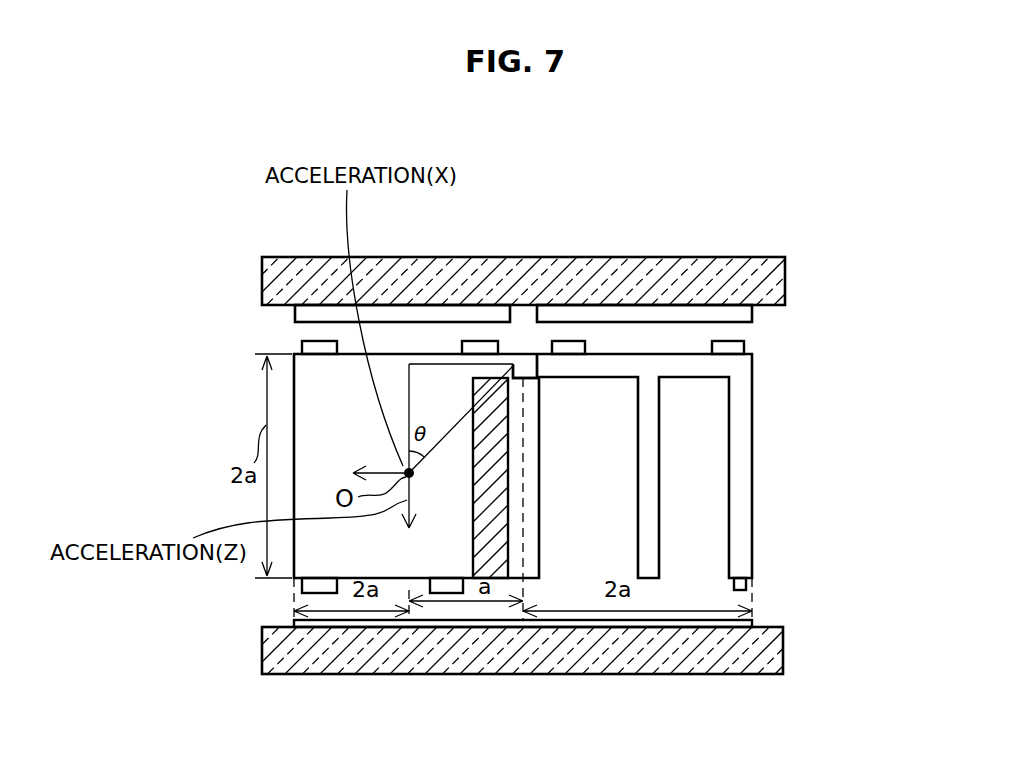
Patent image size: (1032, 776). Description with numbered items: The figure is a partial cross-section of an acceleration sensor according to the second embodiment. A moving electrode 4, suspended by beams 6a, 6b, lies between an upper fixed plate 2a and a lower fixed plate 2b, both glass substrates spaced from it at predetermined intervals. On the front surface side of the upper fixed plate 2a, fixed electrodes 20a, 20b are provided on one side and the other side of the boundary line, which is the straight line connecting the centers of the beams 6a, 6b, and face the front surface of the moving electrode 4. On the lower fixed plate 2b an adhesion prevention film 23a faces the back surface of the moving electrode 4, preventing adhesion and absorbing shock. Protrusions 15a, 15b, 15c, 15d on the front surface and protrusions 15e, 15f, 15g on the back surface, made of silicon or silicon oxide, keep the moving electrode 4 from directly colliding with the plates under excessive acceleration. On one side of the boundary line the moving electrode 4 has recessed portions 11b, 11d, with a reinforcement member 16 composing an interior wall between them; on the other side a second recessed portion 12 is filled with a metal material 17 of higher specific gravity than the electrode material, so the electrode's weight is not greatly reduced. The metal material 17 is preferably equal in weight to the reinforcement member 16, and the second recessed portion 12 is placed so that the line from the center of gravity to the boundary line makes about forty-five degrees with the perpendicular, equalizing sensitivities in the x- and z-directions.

The upper fixed plate 2a is at (770, 272).
The lower fixed plate 2b is at (770, 645).
The moving electrode 4 is at (745, 375).
The beam 6a is at (528, 362).
The beam 6b is at (525, 366).
The recessed portion 11b is at (603, 469).
The recessed portion 11d is at (696, 515).
The second recessed portion 12 is at (507, 523).
The protrusion 15a is at (320, 343).
The protrusion 15b is at (482, 343).
The protrusion 15c is at (571, 343).
The protrusion 15d is at (730, 343).
The protrusion 15e is at (322, 595).
The protrusion 15f is at (445, 595).
The protrusion 15g is at (733, 590).
The reinforcement member 16 is at (648, 545).
The metal material 17 is at (497, 537).
The fixed electrode 20a is at (750, 312).
The fixed electrode 20b is at (298, 313).
The adhesion prevention film 23a is at (752, 622).